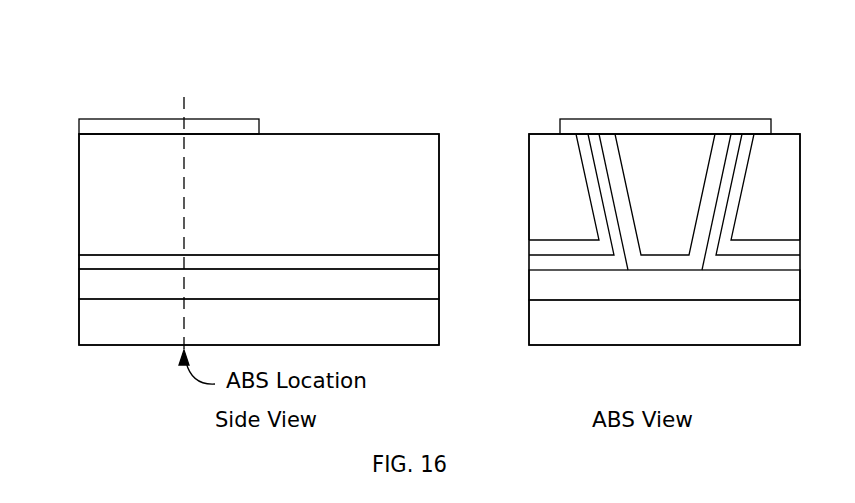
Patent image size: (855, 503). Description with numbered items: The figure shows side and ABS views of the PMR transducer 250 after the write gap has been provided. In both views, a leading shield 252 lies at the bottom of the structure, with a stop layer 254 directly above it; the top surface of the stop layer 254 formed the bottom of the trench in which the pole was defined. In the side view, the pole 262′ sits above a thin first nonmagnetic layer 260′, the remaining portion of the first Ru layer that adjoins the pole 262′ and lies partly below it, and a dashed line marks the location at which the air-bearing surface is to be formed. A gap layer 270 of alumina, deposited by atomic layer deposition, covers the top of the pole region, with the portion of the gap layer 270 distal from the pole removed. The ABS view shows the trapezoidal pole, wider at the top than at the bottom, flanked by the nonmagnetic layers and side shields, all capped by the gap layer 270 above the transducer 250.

The PMR transducer 250 is at (428, 40).
The leading shield 252 is at (79, 313).
The stop layer 254 is at (529, 284).
The first nonmagnetic layer 260′ is at (79, 262).
The pole 262′ is at (305, 134).
The gap layer 270 is at (117, 119).